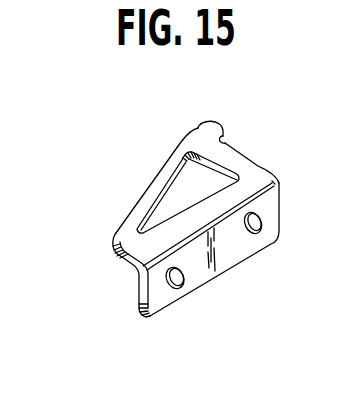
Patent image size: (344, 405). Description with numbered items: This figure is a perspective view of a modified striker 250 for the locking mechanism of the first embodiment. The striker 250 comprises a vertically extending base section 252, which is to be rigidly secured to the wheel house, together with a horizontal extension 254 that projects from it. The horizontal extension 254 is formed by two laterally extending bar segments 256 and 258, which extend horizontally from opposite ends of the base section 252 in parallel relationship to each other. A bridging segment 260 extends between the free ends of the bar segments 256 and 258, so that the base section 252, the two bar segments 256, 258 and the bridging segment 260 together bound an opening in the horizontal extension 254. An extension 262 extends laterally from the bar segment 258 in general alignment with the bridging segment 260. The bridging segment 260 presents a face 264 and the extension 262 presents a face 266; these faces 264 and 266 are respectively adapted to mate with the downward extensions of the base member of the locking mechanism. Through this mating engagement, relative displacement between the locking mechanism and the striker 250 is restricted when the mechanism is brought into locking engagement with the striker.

The striker 250 is at (117, 282).
The base section 252 is at (225, 259).
The horizontal extension 254 is at (244, 141).
The bar segment 256 is at (115, 237).
The bar segment 258 is at (249, 166).
The bridging segment 260 is at (133, 210).
The extension 262 is at (212, 134).
The face 264 is at (172, 176).
The face 266 is at (223, 140).